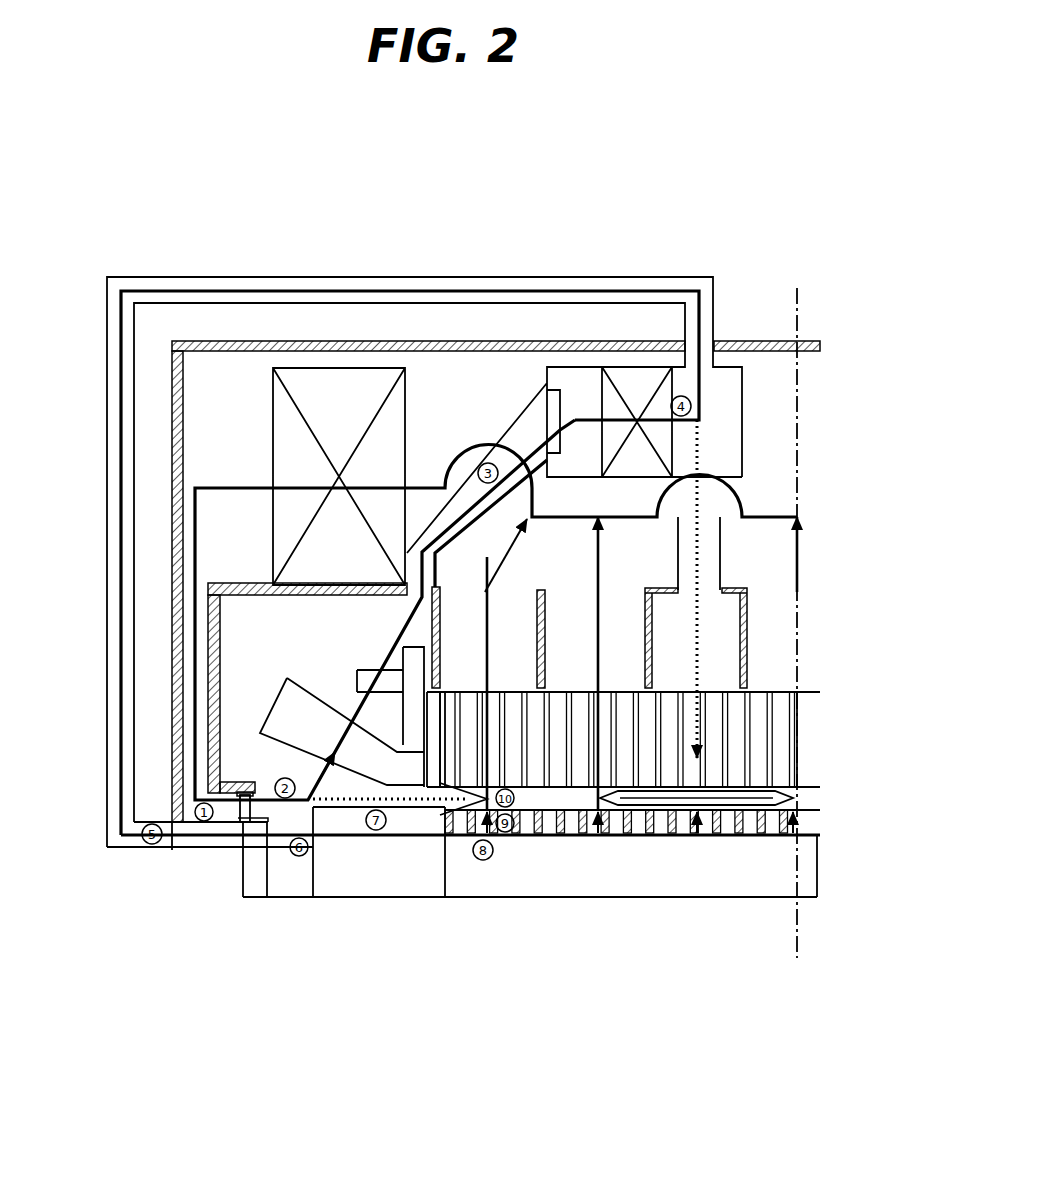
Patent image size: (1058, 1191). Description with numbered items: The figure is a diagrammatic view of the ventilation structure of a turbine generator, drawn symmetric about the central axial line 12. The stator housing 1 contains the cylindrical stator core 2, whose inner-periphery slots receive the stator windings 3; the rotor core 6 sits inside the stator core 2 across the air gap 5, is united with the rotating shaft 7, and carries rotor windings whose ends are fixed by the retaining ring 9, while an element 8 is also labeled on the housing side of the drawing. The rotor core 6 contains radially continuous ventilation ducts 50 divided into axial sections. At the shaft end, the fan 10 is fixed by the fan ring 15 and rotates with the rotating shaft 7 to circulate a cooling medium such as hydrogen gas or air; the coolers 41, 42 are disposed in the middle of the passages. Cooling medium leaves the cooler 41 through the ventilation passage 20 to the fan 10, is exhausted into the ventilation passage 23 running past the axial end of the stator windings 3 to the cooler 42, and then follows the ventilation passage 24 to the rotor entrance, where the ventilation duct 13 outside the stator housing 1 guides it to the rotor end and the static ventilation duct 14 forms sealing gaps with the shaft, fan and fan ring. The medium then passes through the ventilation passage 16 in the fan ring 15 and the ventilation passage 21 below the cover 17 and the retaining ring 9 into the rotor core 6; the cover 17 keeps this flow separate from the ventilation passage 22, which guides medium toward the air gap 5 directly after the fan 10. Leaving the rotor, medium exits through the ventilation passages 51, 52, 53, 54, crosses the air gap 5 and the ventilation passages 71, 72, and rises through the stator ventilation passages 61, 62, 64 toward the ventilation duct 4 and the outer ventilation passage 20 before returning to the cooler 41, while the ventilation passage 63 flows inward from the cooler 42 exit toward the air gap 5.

The stator housing 1 is at (755, 338).
The stator core 2 is at (715, 760).
The stator windings 3 is at (273, 715).
The ventilation duct 4 is at (768, 715).
The air gap 5 is at (540, 805).
The rotor core 6 is at (490, 887).
The rotating shaft 7 is at (298, 887).
The heat insulating wall 8 is at (173, 557).
The retaining ring 9 is at (432, 883).
The fan 10 is at (210, 850).
The central axial line 12 is at (800, 385).
The ventilation duct 13 is at (432, 277).
The ventilation duct 14 is at (172, 850).
The fan ring 15 is at (255, 883).
The ventilation passage 16 is at (240, 855).
The cover 17 is at (289, 893).
The ventilation passage 20 is at (445, 487).
The ventilation passage 21 is at (407, 837).
The ventilation passage 22 is at (335, 805).
The ventilation passage 23 is at (393, 650).
The ventilation passage 24 is at (538, 290).
The cooler 41 is at (338, 375).
The cooler 42 is at (637, 373).
The ventilation ducts 50 is at (582, 820).
The ventilation passage 51 is at (492, 832).
The ventilation passage 52 is at (598, 834).
The ventilation passage 53 is at (697, 834).
The ventilation passage 54 is at (797, 832).
The ventilation passage 61 is at (485, 592).
The ventilation passage 62 is at (597, 590).
The ventilation passage 63 is at (695, 592).
The ventilation passage 64 is at (795, 592).
The ventilation passage 71 is at (652, 812).
The ventilation passage 72 is at (742, 812).